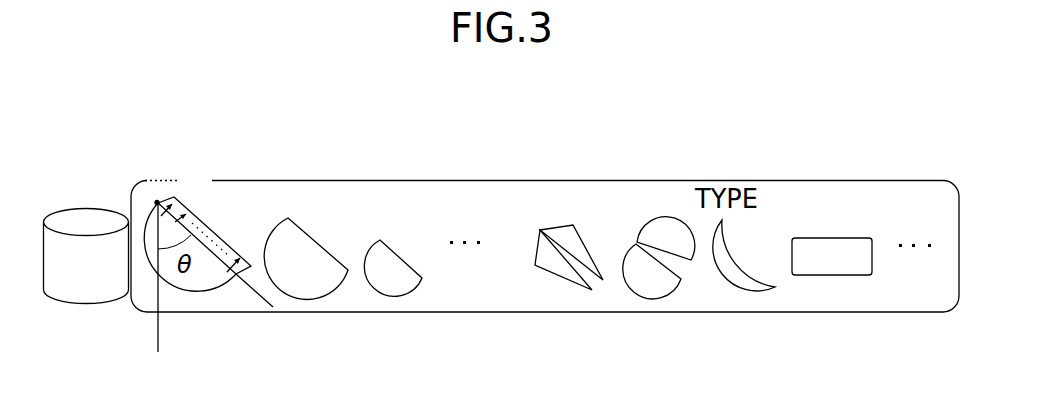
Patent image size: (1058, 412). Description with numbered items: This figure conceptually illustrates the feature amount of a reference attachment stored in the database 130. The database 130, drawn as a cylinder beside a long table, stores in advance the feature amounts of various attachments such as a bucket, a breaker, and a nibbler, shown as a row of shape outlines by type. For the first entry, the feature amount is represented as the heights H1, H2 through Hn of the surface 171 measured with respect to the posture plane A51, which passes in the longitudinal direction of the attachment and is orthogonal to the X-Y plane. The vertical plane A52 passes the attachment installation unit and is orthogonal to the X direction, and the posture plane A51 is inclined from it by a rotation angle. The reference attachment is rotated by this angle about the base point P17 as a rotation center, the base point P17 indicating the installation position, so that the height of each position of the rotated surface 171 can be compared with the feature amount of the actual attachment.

The database 130 is at (85, 209).
The surface 171 is at (232, 243).
The base point P17 is at (157, 202).
The height H1 is at (185, 191).
The height H2 is at (206, 208).
The height Hn is at (252, 250).
The posture plane A51 is at (253, 293).
The vertical plane A52 is at (158, 330).